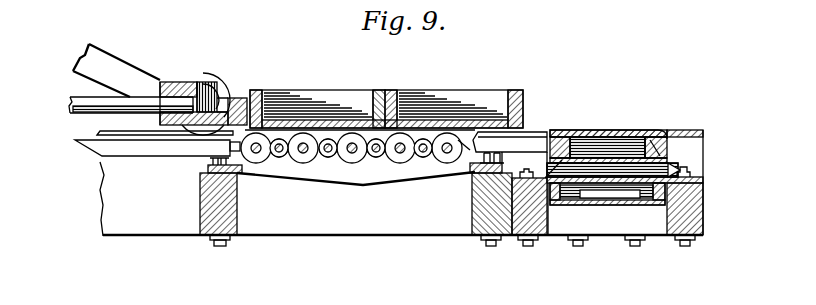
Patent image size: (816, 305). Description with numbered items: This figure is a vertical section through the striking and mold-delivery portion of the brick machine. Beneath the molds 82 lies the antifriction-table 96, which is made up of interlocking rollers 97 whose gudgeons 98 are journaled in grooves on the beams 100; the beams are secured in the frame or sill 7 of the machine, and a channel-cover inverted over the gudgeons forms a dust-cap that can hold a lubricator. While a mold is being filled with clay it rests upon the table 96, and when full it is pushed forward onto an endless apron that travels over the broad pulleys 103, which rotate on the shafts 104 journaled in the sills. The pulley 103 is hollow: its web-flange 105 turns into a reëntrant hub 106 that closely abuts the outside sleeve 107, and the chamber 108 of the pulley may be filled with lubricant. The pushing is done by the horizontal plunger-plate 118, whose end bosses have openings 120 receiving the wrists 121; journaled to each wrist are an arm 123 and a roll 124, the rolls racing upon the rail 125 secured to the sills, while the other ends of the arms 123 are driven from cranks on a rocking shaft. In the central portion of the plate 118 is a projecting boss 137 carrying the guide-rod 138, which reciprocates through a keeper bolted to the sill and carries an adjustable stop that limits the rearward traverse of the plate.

The frame 7 is at (362, 223).
The housing 82 is at (384, 110).
The antifriction-table 96 is at (351, 157).
The interlocking rollers 97 is at (303, 163).
The gudgeons 98 is at (423, 158).
The beams 100 is at (363, 175).
The broad pulleys 103 is at (600, 130).
The shafts 104 is at (672, 165).
The web-flange 105 is at (636, 198).
The reëntrant hub 106 is at (592, 180).
The outside sleeve 107 is at (553, 130).
The chamber of the pulley 108 is at (630, 130).
The horizontal plunger-plate 118 is at (223, 112).
The openings 120 is at (193, 82).
The wrists 121 is at (522, 300).
The arm 123 is at (118, 63).
The rolls 124 is at (211, 77).
The rail 125 is at (104, 137).
The projecting boss 137 is at (174, 82).
The guide-rod 138 is at (69, 101).